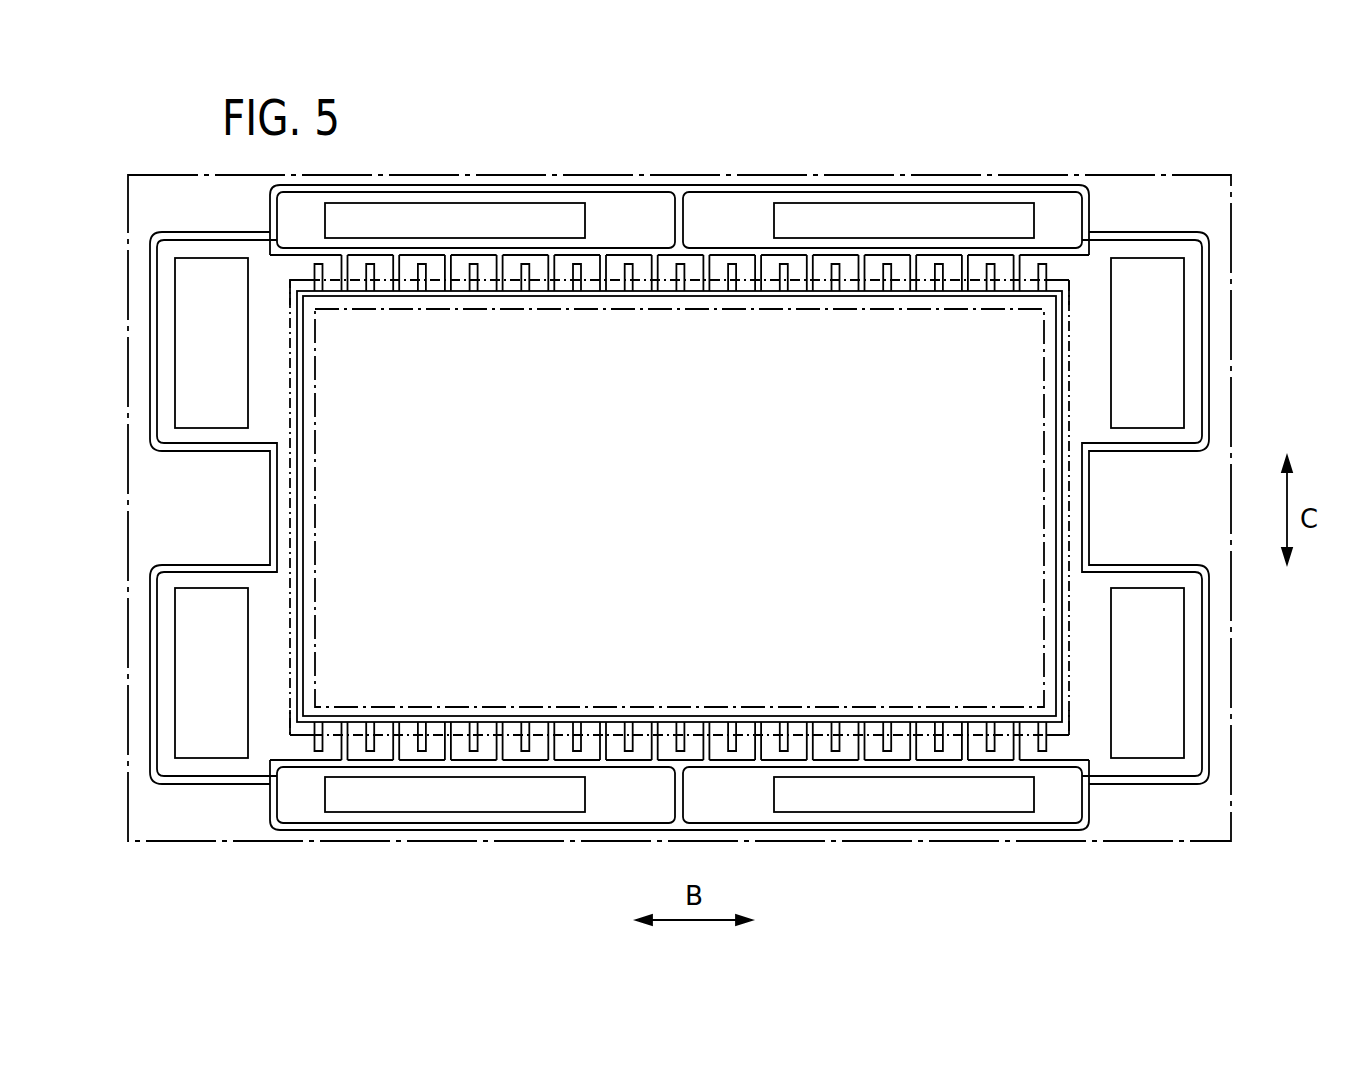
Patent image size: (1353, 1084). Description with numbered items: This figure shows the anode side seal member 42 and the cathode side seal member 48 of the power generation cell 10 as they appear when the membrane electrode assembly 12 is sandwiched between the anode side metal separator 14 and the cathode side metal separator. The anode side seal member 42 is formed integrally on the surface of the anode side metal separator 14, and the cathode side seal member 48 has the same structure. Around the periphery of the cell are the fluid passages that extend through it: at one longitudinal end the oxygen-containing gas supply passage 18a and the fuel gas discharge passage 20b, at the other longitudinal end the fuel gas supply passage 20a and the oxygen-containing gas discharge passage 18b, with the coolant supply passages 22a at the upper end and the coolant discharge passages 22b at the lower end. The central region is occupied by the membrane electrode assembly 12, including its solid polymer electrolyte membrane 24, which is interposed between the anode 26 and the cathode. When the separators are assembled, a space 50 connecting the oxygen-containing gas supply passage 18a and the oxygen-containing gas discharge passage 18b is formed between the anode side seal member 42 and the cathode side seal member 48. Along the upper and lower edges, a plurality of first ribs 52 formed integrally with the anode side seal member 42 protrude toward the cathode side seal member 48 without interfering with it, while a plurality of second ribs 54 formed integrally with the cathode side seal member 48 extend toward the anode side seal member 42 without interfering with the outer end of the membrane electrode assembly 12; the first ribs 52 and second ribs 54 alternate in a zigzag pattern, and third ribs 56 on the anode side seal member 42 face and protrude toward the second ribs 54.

The power generation cell 10 is at (649, 142).
The membrane electrode assembly 12 is at (291, 540).
The anode side metal separator 14 is at (1052, 175).
The oxygen-containing gas supply passage 18a is at (211, 343).
The oxygen-containing gas discharge passage 18b is at (1147, 673).
The fuel gas supply passage 20a is at (1147, 343).
The fuel gas discharge passage 20b is at (211, 673).
The coolant supply passages 22a is at (679, 220).
The coolant discharge passages 22b is at (679, 794).
The solid polymer electrolyte membrane 24 is at (942, 708).
The anode 26 is at (1046, 524).
The anode side seal member 42 is at (301, 512).
The cathode side seal member 48 is at (722, 248).
The space 50 is at (622, 262).
The first ribs 52 is at (934, 273).
The second ribs 54 is at (968, 263).
The third ribs 56 is at (967, 283).